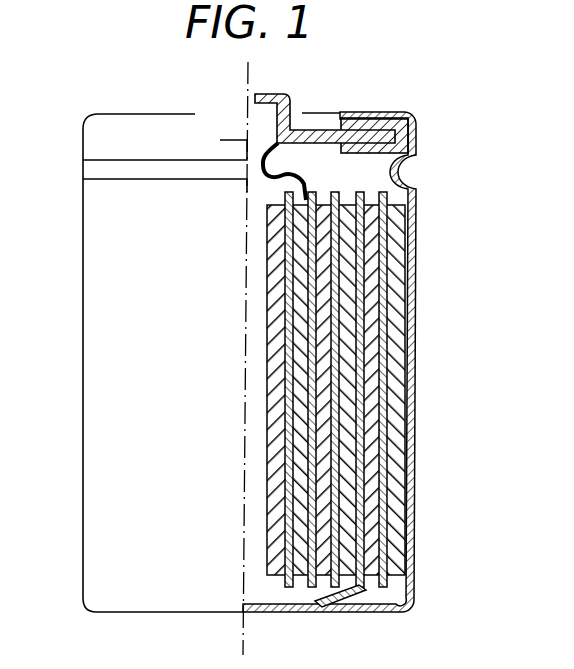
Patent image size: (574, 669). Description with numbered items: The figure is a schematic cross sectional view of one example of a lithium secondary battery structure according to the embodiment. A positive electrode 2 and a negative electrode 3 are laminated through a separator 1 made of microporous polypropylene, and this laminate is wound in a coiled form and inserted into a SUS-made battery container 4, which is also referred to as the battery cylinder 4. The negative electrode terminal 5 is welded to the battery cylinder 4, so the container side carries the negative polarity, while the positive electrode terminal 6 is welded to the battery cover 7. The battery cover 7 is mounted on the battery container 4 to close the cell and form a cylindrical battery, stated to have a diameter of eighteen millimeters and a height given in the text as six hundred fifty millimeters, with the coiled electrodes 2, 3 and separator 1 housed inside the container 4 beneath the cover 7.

The separator 1 is at (388, 580).
The positive electrode 2 is at (299, 577).
The negative electrode 3 is at (266, 577).
The battery container 4 is at (414, 496).
The negative electrode terminal 5 is at (357, 606).
The positive electrode terminal 6 is at (276, 149).
The battery cover 7 is at (324, 130).